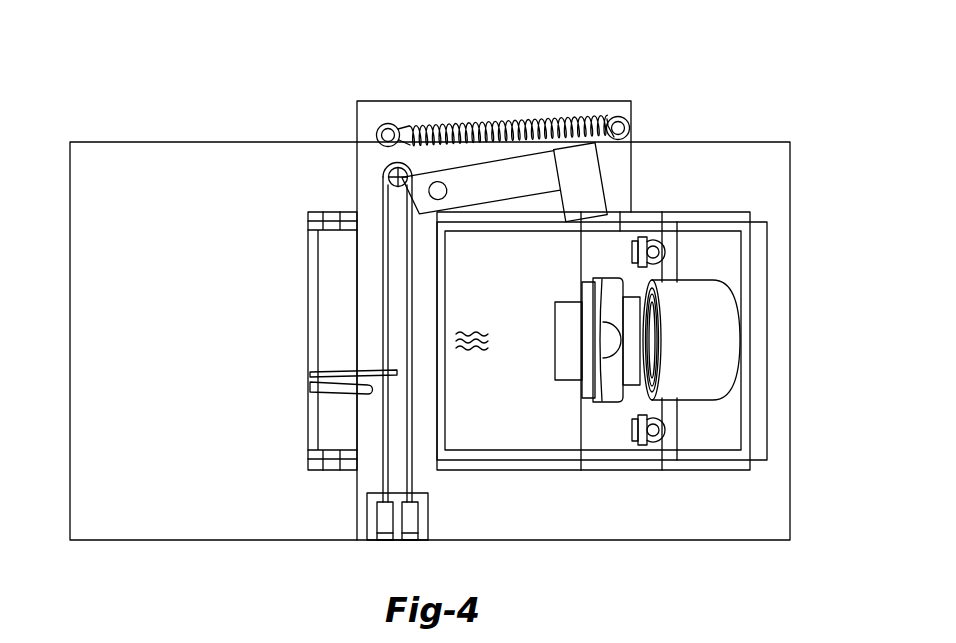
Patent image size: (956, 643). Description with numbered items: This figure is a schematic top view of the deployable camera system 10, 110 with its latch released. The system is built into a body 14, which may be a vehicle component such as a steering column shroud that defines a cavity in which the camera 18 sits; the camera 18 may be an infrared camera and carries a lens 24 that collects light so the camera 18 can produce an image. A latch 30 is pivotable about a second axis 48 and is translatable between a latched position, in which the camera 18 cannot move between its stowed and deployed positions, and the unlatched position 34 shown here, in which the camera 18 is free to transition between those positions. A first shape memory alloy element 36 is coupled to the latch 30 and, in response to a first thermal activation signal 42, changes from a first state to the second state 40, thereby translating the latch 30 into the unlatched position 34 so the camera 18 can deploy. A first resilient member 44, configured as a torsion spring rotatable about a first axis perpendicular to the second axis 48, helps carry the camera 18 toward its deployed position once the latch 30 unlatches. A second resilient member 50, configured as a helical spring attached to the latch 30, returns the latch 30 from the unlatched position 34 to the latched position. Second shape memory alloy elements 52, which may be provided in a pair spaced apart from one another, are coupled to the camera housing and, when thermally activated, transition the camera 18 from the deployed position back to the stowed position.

The deployable camera system 10 is at (439, 287).
The deployable camera system 110 is at (137, 92).
The body 14 is at (182, 157).
The unlatched position 34 is at (668, 104).
The second resilient member 50 is at (478, 117).
The latch 30 is at (592, 178).
The second axis 48 is at (396, 175).
The first shape memory alloy element 36 is at (439, 352).
The second state 40 is at (417, 412).
The first resilient member 44 is at (333, 372).
The first thermal activation signal 42 is at (470, 330).
The camera 18 is at (722, 320).
The lens 24 is at (737, 373).
The second shape memory alloy element 52 is at (665, 250).